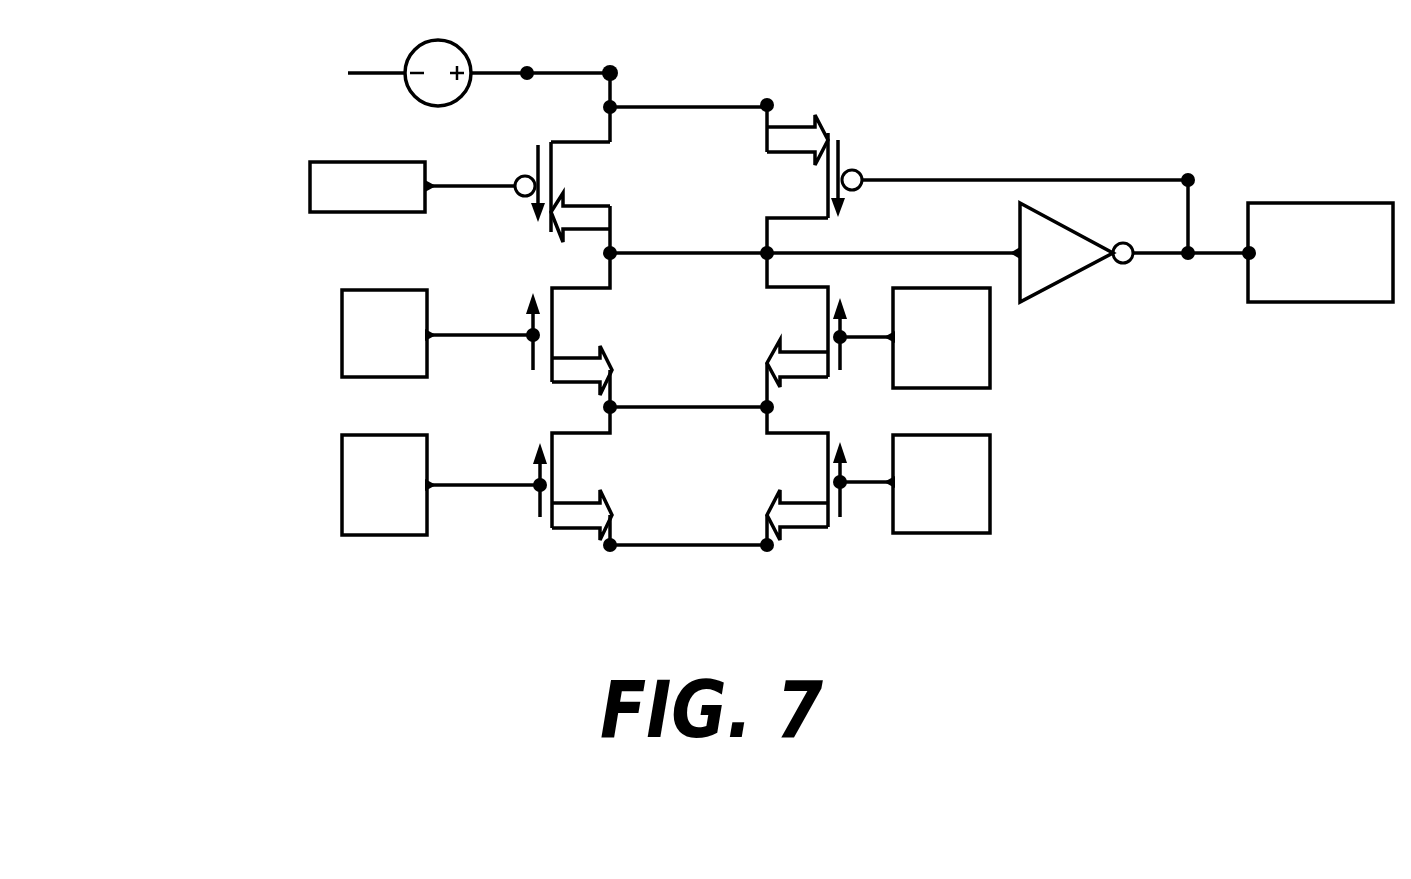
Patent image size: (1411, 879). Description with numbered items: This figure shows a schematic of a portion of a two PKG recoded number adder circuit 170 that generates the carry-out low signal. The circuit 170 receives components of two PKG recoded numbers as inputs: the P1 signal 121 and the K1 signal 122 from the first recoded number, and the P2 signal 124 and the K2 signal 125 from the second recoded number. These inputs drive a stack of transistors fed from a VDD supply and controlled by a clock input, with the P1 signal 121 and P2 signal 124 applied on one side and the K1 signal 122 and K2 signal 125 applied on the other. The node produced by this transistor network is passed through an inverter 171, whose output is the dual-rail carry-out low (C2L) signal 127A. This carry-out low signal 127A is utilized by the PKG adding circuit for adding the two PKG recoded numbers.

The clock flip-flop circuit 170 is at (196, 183).
The P1 signal 121 is at (437, 333).
The P2 signal 124 is at (441, 485).
The K1 signal 122 is at (915, 338).
The K2 signal 125 is at (915, 484).
The inverter 171 is at (1071, 252).
The dual-rail carry-out low (C2L) signal 127A is at (1320, 252).